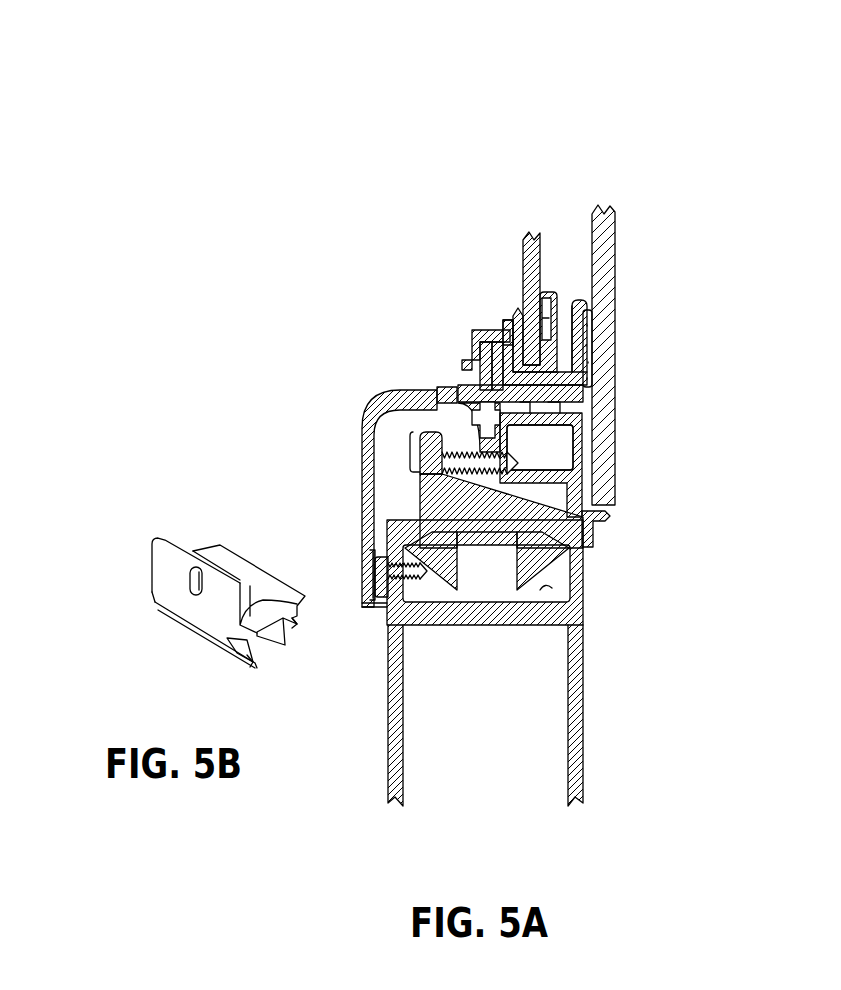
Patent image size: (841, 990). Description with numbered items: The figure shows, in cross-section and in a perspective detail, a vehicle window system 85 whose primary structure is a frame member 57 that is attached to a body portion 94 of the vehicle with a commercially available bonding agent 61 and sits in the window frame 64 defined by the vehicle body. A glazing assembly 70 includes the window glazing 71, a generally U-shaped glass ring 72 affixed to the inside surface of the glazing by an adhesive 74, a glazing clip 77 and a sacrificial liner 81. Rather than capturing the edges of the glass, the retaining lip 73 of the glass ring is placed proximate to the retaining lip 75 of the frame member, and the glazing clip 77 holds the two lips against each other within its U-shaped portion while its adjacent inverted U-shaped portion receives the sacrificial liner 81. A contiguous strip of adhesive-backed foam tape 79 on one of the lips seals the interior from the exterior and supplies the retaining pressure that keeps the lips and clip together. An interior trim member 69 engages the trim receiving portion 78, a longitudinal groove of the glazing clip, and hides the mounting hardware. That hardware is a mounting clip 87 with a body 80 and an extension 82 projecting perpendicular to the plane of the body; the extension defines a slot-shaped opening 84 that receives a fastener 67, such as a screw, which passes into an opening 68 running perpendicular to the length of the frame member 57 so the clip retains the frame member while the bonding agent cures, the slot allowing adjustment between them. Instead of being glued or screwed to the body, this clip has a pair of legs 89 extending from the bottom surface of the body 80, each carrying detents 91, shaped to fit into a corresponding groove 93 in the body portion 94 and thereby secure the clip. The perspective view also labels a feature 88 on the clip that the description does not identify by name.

In FIG. 5A, the frame member 57 is at (578, 440).
In FIG. 5A, the bonding agent 61 is at (585, 543).
In FIG. 5A, the window frame 64 is at (410, 517).
In FIG. 5A, the fastener 67 is at (433, 430).
In FIG. 5A, the opening 68 is at (588, 488).
In FIG. 5A, the interior trim member 69 is at (368, 418).
In FIG. 5A, the glazing assembly 70 is at (550, 185).
In FIG. 5A, the window glazing 71 is at (616, 302).
In FIG. 5A, the glass ring 72 is at (588, 398).
In FIG. 5A, the retaining lip 73 is at (516, 312).
In FIG. 5A, the adhesive 74 is at (590, 332).
In FIG. 5A, the retaining lip 75 is at (503, 332).
In FIG. 5A, the glazing clip 77 is at (472, 327).
In FIG. 5A, the trim receiving portion 78 is at (490, 375).
In FIG. 5A, the foam tape 79 is at (511, 322).
In FIG. 5A, the body 80 is at (433, 533).
In FIG. 5B, the body 80 is at (238, 624).
In FIG. 5A, the sacrificial liner 81 is at (546, 250).
In FIG. 5A, the extension 82 is at (462, 395).
In FIG. 5B, the extension 82 is at (163, 534).
In FIG. 5B, the opening 84 is at (297, 622).
In FIG. 5A, the window system 85 is at (328, 267).
In FIG. 5A, the mounting clip 87 is at (420, 432).
In FIG. 5B, the mounting clip 87 is at (257, 565).
In FIG. 5B, the hole 88 is at (193, 578).
In FIG. 5A, the legs 89 is at (605, 509).
In FIG. 5B, the legs 89 is at (218, 640).
In FIG. 5A, the detents 91 is at (450, 587).
In FIG. 5B, the detents 91 is at (250, 660).
In FIG. 5A, the groove 93 is at (583, 632).
In FIG. 5A, the body portion 94 is at (583, 754).